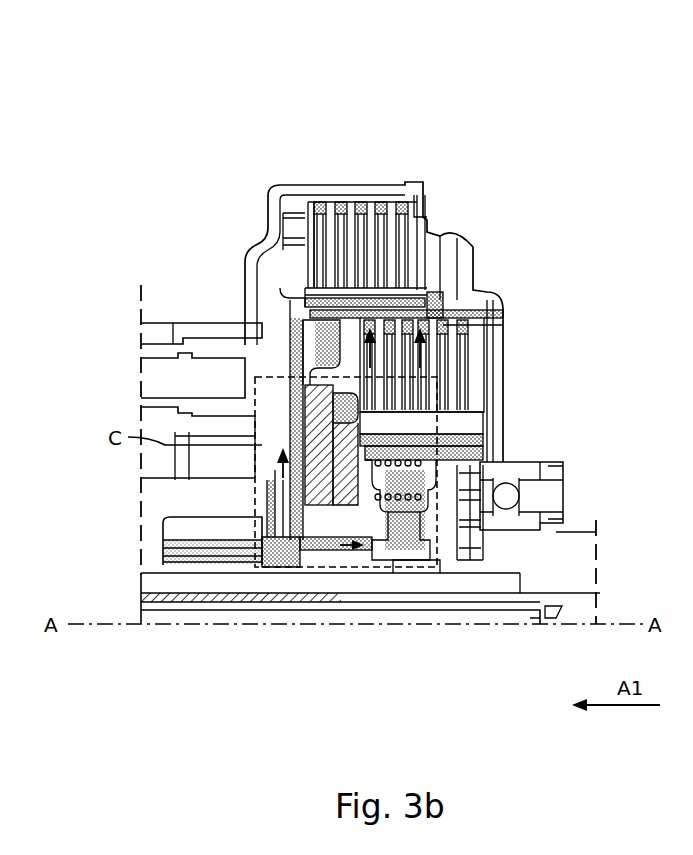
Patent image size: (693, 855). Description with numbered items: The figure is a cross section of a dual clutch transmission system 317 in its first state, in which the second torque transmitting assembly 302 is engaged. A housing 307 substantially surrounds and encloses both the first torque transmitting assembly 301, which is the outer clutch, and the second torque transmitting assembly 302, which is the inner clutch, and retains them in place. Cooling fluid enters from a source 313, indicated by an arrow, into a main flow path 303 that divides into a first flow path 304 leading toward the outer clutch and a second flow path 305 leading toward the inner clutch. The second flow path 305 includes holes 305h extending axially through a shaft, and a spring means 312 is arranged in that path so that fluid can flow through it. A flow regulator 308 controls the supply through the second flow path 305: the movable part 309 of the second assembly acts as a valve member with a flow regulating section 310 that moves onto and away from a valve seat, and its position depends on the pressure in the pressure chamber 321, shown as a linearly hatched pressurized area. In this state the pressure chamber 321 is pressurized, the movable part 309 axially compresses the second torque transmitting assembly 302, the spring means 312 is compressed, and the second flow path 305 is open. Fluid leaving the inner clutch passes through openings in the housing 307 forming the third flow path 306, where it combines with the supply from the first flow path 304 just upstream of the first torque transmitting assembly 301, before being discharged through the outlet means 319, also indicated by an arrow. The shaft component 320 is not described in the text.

The first torque transmitting assembly 301 is at (498, 226).
The second torque transmitting assembly 302 is at (615, 362).
The main flow path 303 is at (283, 562).
The first flow path 304 is at (320, 363).
The second flow path 305 is at (485, 453).
The holes 305h is at (320, 540).
The third flow path 306 is at (420, 357).
The housing 307 is at (520, 296).
The flow regulator 308 is at (390, 648).
The movable part 309 is at (327, 422).
The flow regulating section 310 is at (383, 540).
The spring means 312 is at (488, 490).
The source 313 is at (140, 548).
The dual clutch transmission system 317 is at (195, 152).
The outlet means 319 is at (365, 140).
The input shaft 320 is at (184, 330).
The pressure chamber 321 is at (305, 490).